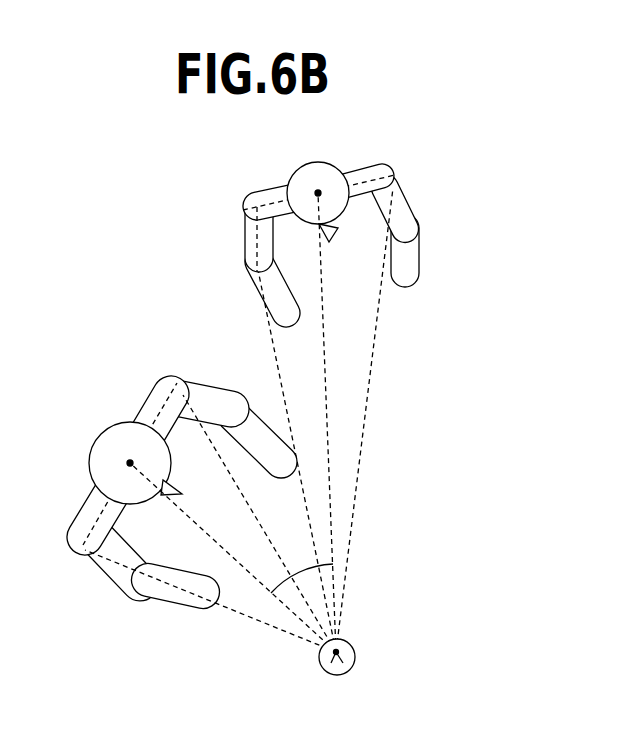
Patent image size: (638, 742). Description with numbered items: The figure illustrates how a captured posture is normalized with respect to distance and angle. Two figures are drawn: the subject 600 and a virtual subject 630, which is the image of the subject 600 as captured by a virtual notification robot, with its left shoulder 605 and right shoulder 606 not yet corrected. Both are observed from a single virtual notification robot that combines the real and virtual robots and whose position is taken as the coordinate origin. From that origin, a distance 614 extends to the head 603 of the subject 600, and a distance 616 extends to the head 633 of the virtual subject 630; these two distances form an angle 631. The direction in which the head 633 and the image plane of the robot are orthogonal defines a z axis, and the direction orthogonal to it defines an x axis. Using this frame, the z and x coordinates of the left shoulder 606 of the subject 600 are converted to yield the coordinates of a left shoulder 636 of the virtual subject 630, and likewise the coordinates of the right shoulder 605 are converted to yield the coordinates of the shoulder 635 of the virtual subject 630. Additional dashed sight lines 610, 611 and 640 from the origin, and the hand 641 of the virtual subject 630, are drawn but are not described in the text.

The virtual subject 630 is at (311, 382).
The head 633 is at (327, 177).
The left shoulder 635 is at (393, 175).
The left shoulder 636 is at (243, 210).
The left hand of subject 641 is at (258, 317).
The subject 600 is at (179, 506).
The head 603 is at (130, 463).
The right shoulder 605 is at (180, 377).
The left shoulder 606 is at (85, 552).
The distance 614 is at (170, 503).
The line of sight to hand 610 is at (250, 620).
The line of sight to arm 611 is at (258, 515).
The distance 616 is at (323, 330).
The line of sight to arm 640 is at (363, 425).
The angle 631 is at (330, 566).